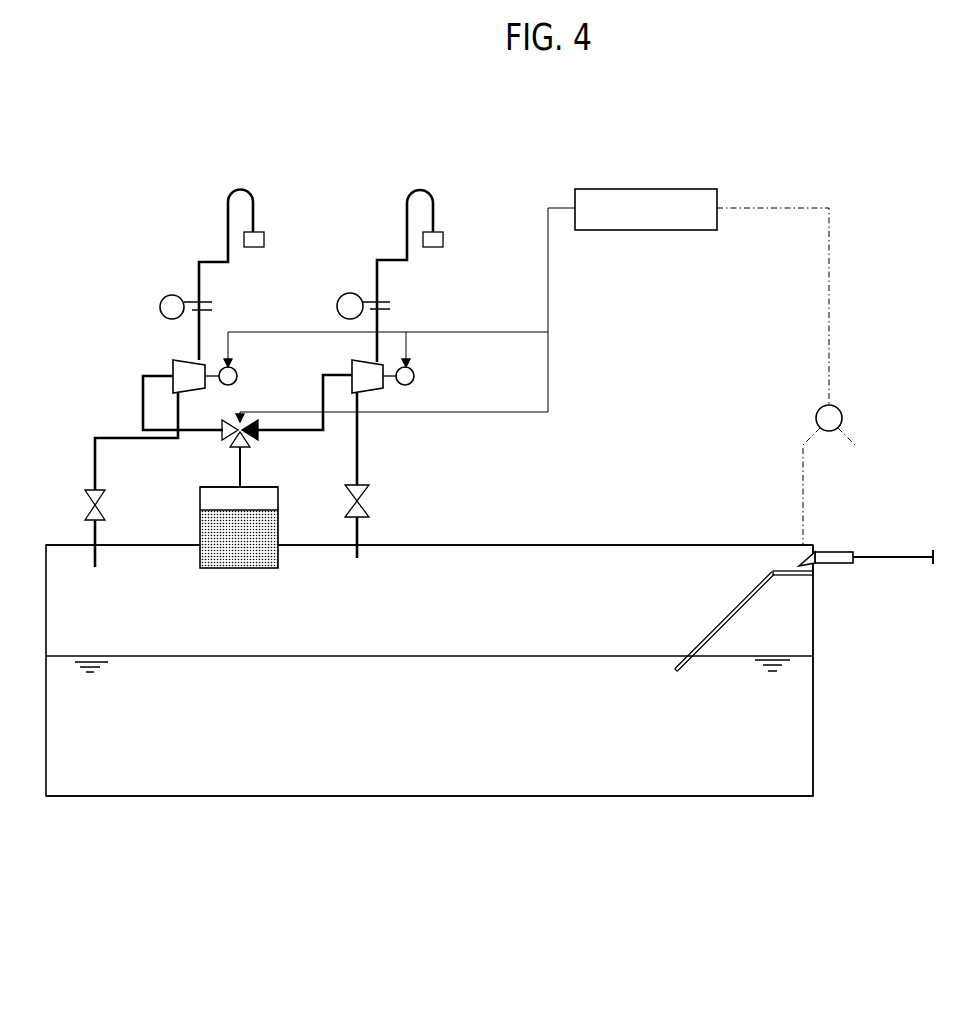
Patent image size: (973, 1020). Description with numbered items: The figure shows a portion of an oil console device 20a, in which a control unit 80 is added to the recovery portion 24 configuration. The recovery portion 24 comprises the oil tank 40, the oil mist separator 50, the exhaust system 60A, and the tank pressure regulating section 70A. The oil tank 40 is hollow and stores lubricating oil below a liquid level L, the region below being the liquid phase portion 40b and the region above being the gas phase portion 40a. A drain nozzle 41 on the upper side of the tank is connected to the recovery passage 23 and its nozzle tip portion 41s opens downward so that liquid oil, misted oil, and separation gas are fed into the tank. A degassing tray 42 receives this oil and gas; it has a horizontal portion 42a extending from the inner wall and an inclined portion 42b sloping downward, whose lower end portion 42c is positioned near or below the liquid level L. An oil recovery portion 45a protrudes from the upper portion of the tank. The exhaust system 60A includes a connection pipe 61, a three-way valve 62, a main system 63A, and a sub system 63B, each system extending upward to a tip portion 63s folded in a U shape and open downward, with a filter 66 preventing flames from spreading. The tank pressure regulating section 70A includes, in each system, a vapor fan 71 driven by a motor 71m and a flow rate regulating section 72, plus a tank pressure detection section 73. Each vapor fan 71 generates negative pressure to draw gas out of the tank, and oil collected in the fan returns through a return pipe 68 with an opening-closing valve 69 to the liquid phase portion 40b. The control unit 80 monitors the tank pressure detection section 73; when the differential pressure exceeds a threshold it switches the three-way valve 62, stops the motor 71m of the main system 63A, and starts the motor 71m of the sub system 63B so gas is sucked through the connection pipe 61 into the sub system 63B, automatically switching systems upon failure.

The oil console device 20a is at (896, 208).
The exhaust system 60A is at (128, 284).
The flow rate regulating section 72 is at (193, 300).
The tank pressure regulating section 70A is at (495, 376).
The tip portion 63s is at (257, 232).
The filter 66 is at (267, 242).
The vapor fan 71 is at (178, 358).
The motor 71m is at (238, 372).
The three-way valve 62 is at (245, 425).
The connection pipe 61 is at (242, 463).
The main system 63A is at (143, 410).
The sub system 63B is at (327, 428).
The return pipe 68 is at (95, 482).
The opening-closing valve 69 is at (90, 512).
The oil mist separator 50 is at (210, 527).
The oil recovery portion 45a is at (280, 500).
The gas phase portion 40a is at (505, 543).
The oil tank 40 is at (613, 545).
The liquid phase portion 40b is at (427, 772).
The recovery portion 24 is at (830, 708).
The liquid level L is at (785, 652).
The nozzle tip portion 41s is at (795, 545).
The drain nozzle 41 is at (838, 552).
The degassing tray 42 is at (728, 583).
The horizontal portion 42a is at (793, 573).
The inclined portion 42b is at (724, 621).
The lower end portion 42c is at (676, 660).
The recovery passage 23 is at (880, 548).
The tank pressure detection section 73 is at (830, 403).
The control unit 80 is at (640, 232).